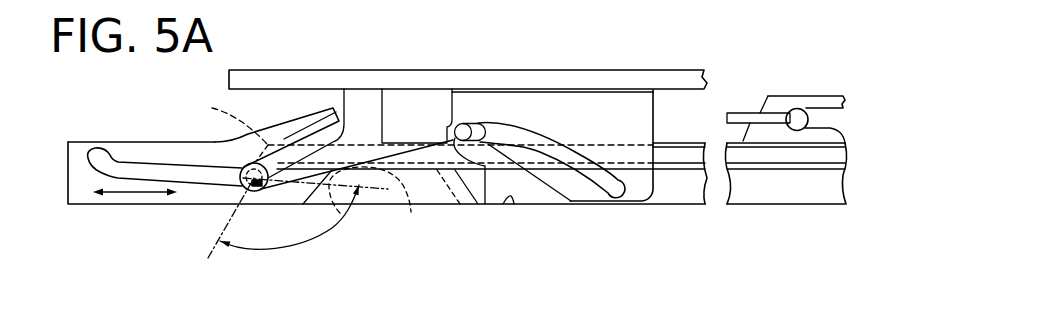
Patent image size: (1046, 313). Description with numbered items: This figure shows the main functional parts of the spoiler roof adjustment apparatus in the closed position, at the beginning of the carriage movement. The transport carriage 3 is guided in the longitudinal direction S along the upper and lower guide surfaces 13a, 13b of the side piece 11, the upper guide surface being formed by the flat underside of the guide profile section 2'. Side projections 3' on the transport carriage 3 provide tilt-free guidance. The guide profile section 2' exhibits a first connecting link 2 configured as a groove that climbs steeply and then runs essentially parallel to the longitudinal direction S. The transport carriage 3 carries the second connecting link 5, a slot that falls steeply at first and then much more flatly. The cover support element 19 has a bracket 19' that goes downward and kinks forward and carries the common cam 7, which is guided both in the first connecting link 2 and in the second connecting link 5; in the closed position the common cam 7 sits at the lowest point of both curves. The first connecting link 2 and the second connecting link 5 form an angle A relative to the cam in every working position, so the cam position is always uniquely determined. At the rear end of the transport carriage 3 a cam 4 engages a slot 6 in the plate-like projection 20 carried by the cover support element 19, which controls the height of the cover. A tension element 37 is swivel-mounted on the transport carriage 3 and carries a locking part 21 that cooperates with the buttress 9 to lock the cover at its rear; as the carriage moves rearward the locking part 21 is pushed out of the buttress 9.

The first connecting link 2 is at (785, 189).
The guide profile section 2' is at (786, 211).
The transport carriage 3 is at (386, 219).
The projections 3' is at (427, 233).
The cam 4 is at (487, 127).
The second connecting link 5 is at (192, 180).
The slot 6 is at (532, 138).
The common cam 7 is at (258, 196).
The buttress 9 is at (808, 96).
The side piece 11 is at (672, 206).
The upper guide surface 13a is at (340, 213).
The lower guide surface 13b is at (516, 215).
The cover support element 19 is at (468, 92).
The bracket 19' is at (302, 207).
The plate-like projection 20 is at (625, 110).
The locking part 21 is at (820, 118).
The tension element 37 is at (306, 117).
The longitudinal direction S is at (136, 196).
The angle A is at (298, 222).